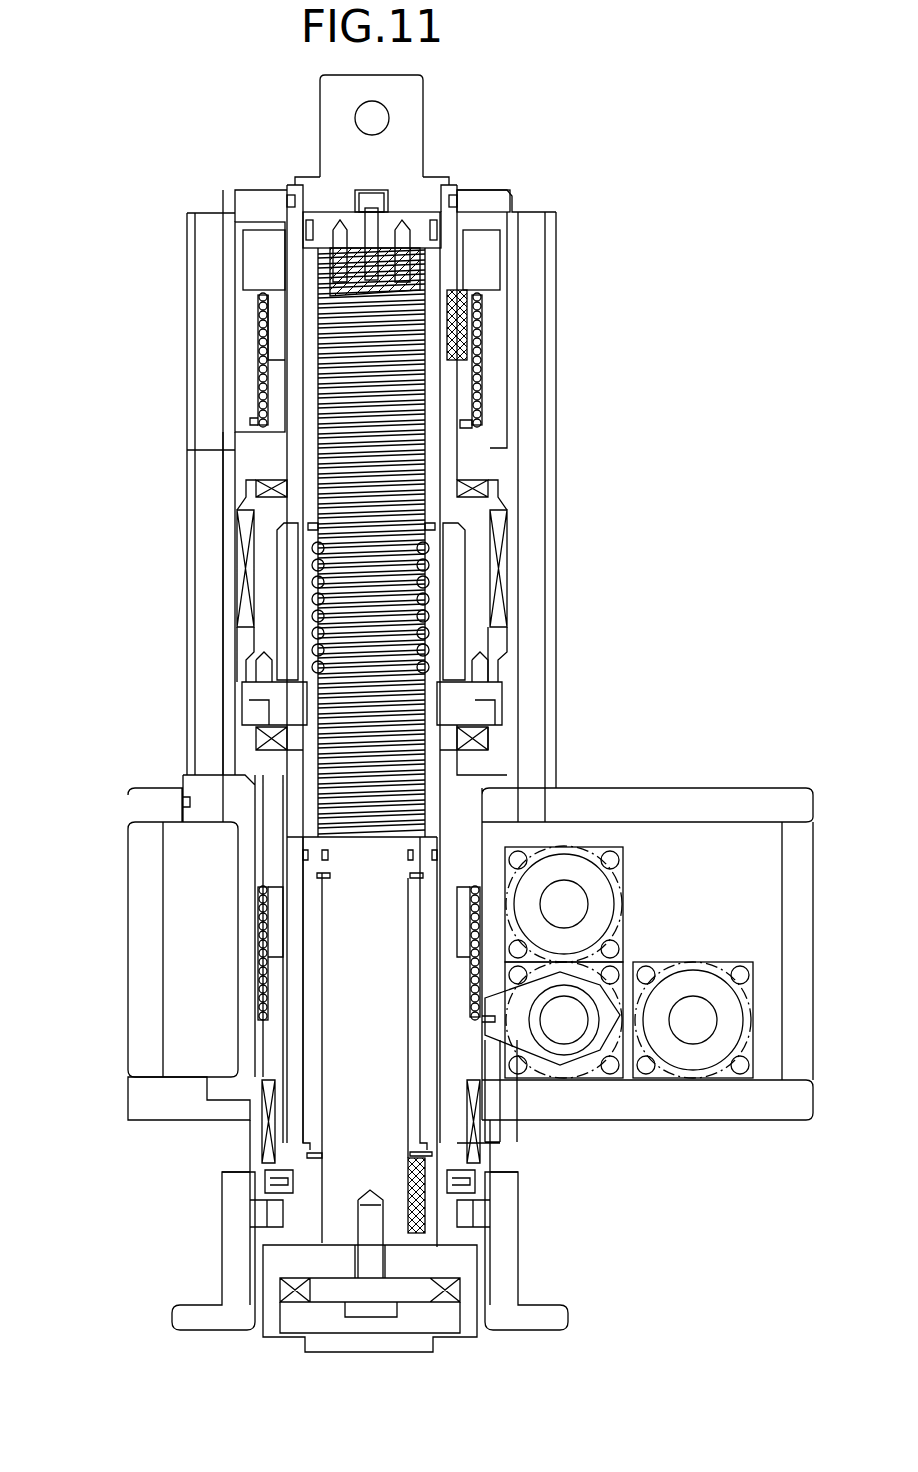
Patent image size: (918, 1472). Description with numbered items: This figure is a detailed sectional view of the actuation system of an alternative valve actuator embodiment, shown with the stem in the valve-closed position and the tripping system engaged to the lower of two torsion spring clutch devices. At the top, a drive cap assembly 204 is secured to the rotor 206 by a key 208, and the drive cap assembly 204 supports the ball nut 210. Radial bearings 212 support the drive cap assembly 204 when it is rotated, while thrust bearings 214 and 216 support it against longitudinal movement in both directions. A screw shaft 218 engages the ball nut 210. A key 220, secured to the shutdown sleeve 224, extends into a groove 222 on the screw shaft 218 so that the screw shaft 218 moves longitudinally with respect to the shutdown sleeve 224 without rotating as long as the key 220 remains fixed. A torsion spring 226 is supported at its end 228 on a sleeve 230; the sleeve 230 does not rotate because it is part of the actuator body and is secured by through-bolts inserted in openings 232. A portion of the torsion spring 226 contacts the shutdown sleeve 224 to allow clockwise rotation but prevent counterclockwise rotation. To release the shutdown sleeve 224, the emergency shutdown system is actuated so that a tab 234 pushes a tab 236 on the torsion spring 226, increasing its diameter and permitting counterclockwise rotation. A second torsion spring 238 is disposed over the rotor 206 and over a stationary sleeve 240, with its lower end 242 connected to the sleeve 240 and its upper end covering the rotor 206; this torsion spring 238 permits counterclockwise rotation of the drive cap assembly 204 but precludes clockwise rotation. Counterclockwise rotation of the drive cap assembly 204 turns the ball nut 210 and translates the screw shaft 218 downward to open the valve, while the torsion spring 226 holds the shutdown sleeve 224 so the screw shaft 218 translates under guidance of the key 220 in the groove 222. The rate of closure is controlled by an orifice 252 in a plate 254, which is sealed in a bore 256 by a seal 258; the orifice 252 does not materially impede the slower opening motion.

The drive cap assembly 204 is at (430, 145).
The rotor 206 is at (275, 315).
The key 208 is at (463, 312).
The ball nut 210 is at (285, 580).
The radial bearings 212 is at (498, 557).
The thrust bearing 214 is at (488, 485).
The thrust bearing 216 is at (475, 737).
The screw shaft 218 is at (345, 408).
The key 220 is at (425, 1193).
The groove 222 is at (405, 1100).
The shutdown sleeve 224 is at (275, 1050).
The torsion spring 226 is at (265, 998).
The end 228 is at (265, 887).
The sleeve 230 is at (205, 760).
The openings 232 is at (225, 222).
The tab 234 is at (525, 1000).
The tab 236 is at (523, 993).
The torsion spring 238 is at (262, 344).
The sleeve 240 is at (237, 468).
The lower end 242 is at (258, 425).
The orifice 252 is at (327, 228).
The plate 254 is at (430, 215).
The bore 256 is at (430, 282).
The seal 258 is at (305, 230).